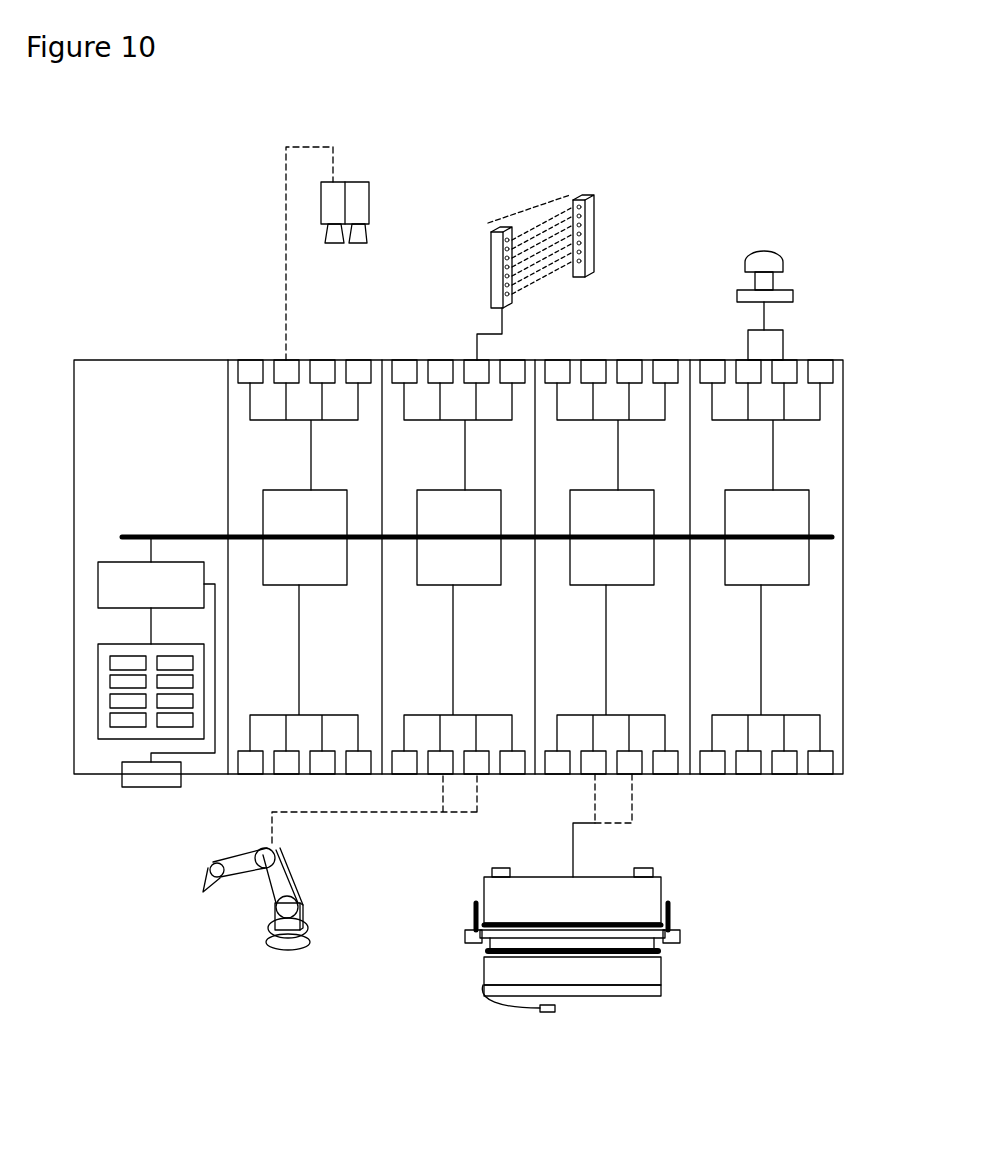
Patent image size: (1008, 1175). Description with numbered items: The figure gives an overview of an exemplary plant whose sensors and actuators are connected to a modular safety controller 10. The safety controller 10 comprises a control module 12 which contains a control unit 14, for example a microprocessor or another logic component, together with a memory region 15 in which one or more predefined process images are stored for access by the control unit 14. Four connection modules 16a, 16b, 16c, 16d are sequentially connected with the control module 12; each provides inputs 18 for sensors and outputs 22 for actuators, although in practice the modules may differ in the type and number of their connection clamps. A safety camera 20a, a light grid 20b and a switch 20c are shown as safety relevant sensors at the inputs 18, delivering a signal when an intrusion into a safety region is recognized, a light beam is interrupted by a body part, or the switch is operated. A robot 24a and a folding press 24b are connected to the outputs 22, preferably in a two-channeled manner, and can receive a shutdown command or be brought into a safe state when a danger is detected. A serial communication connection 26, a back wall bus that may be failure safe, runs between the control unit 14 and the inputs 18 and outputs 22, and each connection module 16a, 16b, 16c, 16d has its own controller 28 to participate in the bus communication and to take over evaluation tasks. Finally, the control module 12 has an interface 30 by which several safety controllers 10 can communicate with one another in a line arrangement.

The modular safety controller 10 is at (120, 277).
The control module 12 is at (157, 360).
The control unit 14 is at (98, 585).
The memory region 15 is at (98, 716).
The connection module 16a is at (262, 665).
The connection module 16b is at (407, 680).
The connection module 16c is at (632, 692).
The connection module 16d is at (820, 680).
The inputs 18 is at (325, 370).
The safety camera 20a is at (357, 193).
The light grid 20b is at (583, 242).
The switch 20c is at (760, 263).
The outputs 22 is at (560, 763).
The robot 24a is at (290, 940).
The folding press 24b is at (643, 973).
The serial communication connection 26 is at (177, 533).
The controller 28 is at (311, 562).
The interface 30 is at (142, 787).